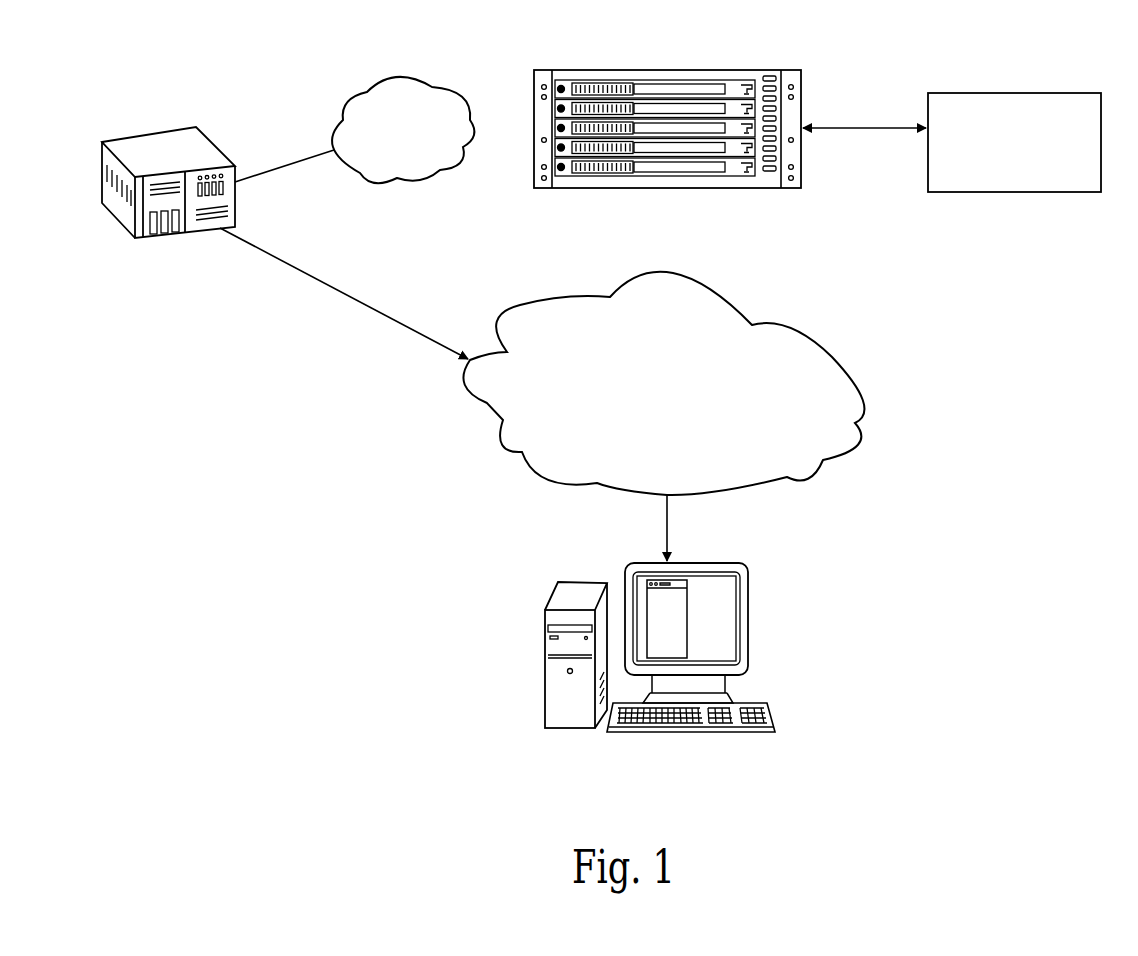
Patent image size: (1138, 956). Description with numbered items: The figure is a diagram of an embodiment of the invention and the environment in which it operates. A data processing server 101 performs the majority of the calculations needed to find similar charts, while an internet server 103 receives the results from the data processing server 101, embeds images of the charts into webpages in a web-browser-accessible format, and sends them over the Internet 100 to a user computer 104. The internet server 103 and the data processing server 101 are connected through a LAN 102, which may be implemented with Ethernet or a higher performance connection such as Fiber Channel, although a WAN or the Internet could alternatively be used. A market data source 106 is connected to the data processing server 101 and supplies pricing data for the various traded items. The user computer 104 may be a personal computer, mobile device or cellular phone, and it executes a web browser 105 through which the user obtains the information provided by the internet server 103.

The Internet 100 is at (832, 357).
The data processing server 101 is at (802, 100).
The LAN 102 is at (407, 75).
The internet server 103 is at (222, 148).
The user computer 104 is at (543, 680).
The web browser 105 is at (673, 607).
The market data source 106 is at (1022, 193).